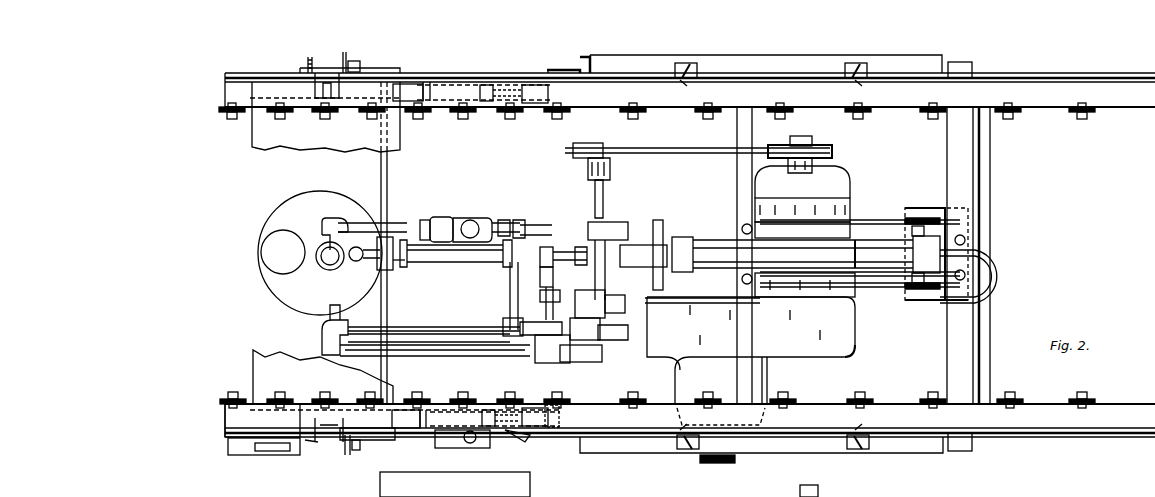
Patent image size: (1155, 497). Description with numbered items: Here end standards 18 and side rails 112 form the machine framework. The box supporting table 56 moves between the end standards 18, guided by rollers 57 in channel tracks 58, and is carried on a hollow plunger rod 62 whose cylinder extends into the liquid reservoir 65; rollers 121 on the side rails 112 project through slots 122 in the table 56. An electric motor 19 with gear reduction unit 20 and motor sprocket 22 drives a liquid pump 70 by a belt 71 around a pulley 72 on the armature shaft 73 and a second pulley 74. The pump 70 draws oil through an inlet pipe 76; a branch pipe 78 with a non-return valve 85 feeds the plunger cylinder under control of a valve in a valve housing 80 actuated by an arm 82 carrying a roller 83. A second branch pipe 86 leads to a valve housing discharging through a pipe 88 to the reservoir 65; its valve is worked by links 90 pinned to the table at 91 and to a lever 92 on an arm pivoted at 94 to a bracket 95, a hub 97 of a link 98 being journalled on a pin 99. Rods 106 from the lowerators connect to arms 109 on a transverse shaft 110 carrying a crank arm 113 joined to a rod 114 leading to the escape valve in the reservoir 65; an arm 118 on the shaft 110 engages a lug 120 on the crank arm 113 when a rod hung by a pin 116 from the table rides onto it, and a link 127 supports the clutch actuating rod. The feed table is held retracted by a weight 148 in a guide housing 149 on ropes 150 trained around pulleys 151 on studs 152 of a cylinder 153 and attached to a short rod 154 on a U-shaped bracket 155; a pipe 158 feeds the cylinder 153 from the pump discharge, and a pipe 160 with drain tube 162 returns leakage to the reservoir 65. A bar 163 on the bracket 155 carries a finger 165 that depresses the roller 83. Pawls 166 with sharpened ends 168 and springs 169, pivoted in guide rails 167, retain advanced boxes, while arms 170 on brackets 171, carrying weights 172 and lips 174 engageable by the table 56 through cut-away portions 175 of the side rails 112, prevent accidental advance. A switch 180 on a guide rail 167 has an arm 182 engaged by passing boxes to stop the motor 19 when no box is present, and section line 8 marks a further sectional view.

The section line 8 is at (280, 250).
The end standards 18 is at (340, 50).
The electric motor 19 is at (852, 200).
The gear reduction unit 20 is at (856, 355).
The motor sprocket 22 is at (710, 462).
The box supporting table 56 is at (255, 136).
The rollers 57 is at (330, 70).
The channel tracks 58 is at (308, 70).
The hollow plunger rod 62 is at (322, 270).
The liquid reservoir 65 is at (268, 295).
The liquid pump 70 is at (612, 340).
The belt 71 is at (675, 148).
The pulley 72 is at (820, 146).
The armature shaft 73 is at (790, 142).
The second pulley 74 is at (586, 160).
The inlet pipe 76 is at (596, 200).
The branch pipe 78 is at (520, 222).
The valve housing 80 is at (470, 217).
The arm 82 is at (480, 225).
The roller 83 is at (445, 216).
The non-return valve 85 is at (426, 218).
The second branch pipe 86 is at (608, 318).
The pipe 88 is at (470, 357).
The parallel links 90 is at (365, 327).
The pivot pin 91 is at (345, 320).
The lever 92 is at (475, 333).
The pivot pin 94 is at (506, 322).
The supporting bracket 95 is at (540, 322).
The sleeve or hub 97 is at (575, 363).
The link 98 is at (548, 364).
The pin 99 is at (540, 300).
The rods 106 is at (356, 60).
The arms 109 is at (390, 70).
The shaft 110 is at (390, 165).
The side rails 112 is at (225, 432).
The crank arm 113 is at (395, 265).
The rod 114 is at (355, 263).
The pin 116 is at (535, 496).
The arm 118 is at (388, 236).
The lug 120 is at (375, 238).
The rollers 121 is at (222, 113).
The slots 122 is at (283, 118).
The link 127 is at (248, 456).
The weight 148 is at (960, 208).
The guide housing 149 is at (928, 208).
The ropes 150 is at (683, 235).
The pulleys 151 is at (940, 302).
The studs 152 is at (890, 282).
The cylinder 153 is at (860, 285).
The short rod 154 is at (640, 244).
The U-shaped bracket 155 is at (655, 218).
The pipe 158 is at (815, 305).
The pipe 160 is at (555, 246).
The drain tube 162 is at (499, 296).
The bar 163 is at (580, 246).
The finger 165 is at (615, 222).
The pawls 166 is at (867, 70).
The guide rails 167 is at (752, 73).
The sharpened ends 168 is at (858, 82).
The springs 169 is at (559, 293).
The arms 170 is at (468, 82).
The brackets 171 is at (490, 83).
The weights 172 is at (555, 68).
The lips 174 is at (405, 80).
The cut away portions 175 is at (427, 80).
The electric switch 180 is at (510, 442).
The switch arm 182 is at (468, 443).